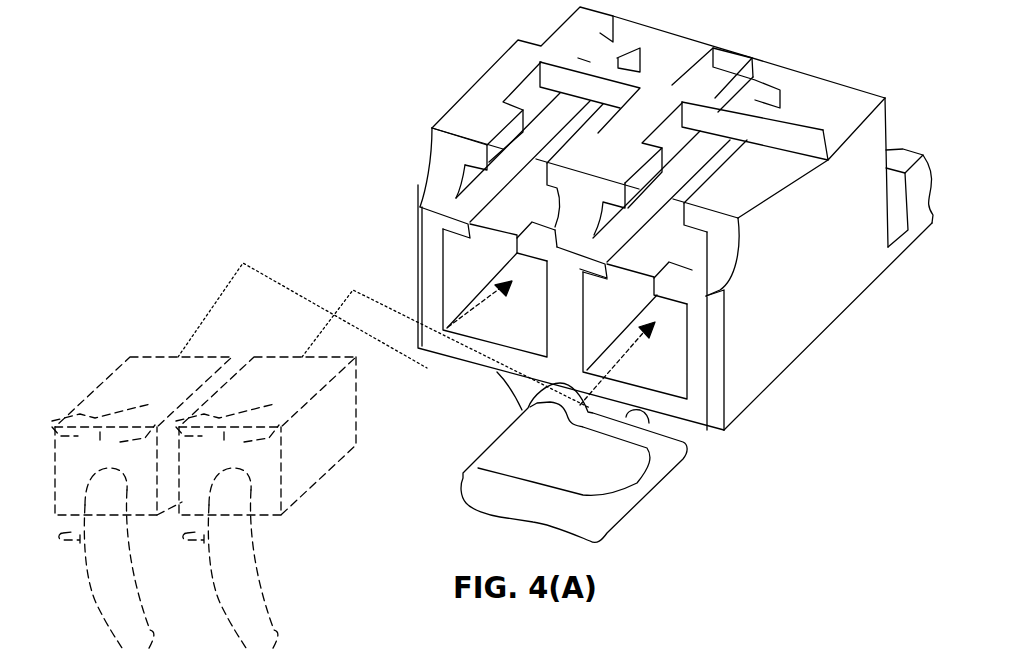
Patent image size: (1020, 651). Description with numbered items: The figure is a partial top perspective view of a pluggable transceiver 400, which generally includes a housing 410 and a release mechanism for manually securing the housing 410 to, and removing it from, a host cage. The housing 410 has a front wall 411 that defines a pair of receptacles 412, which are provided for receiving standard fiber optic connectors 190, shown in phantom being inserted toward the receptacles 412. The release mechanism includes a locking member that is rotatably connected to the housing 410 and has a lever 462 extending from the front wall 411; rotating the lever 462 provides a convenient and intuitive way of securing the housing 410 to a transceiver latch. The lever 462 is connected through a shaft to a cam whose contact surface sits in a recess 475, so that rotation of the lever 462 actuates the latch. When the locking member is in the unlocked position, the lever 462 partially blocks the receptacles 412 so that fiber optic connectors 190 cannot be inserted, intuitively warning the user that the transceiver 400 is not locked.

The pluggable transceiver 400 is at (363, 49).
The housing 410 is at (428, 197).
The front wall 411 is at (432, 268).
The receptacles 412 is at (612, 327).
The recess 475 is at (578, 155).
The lever 462 is at (657, 477).
The fiber optic connectors 190 is at (233, 388).